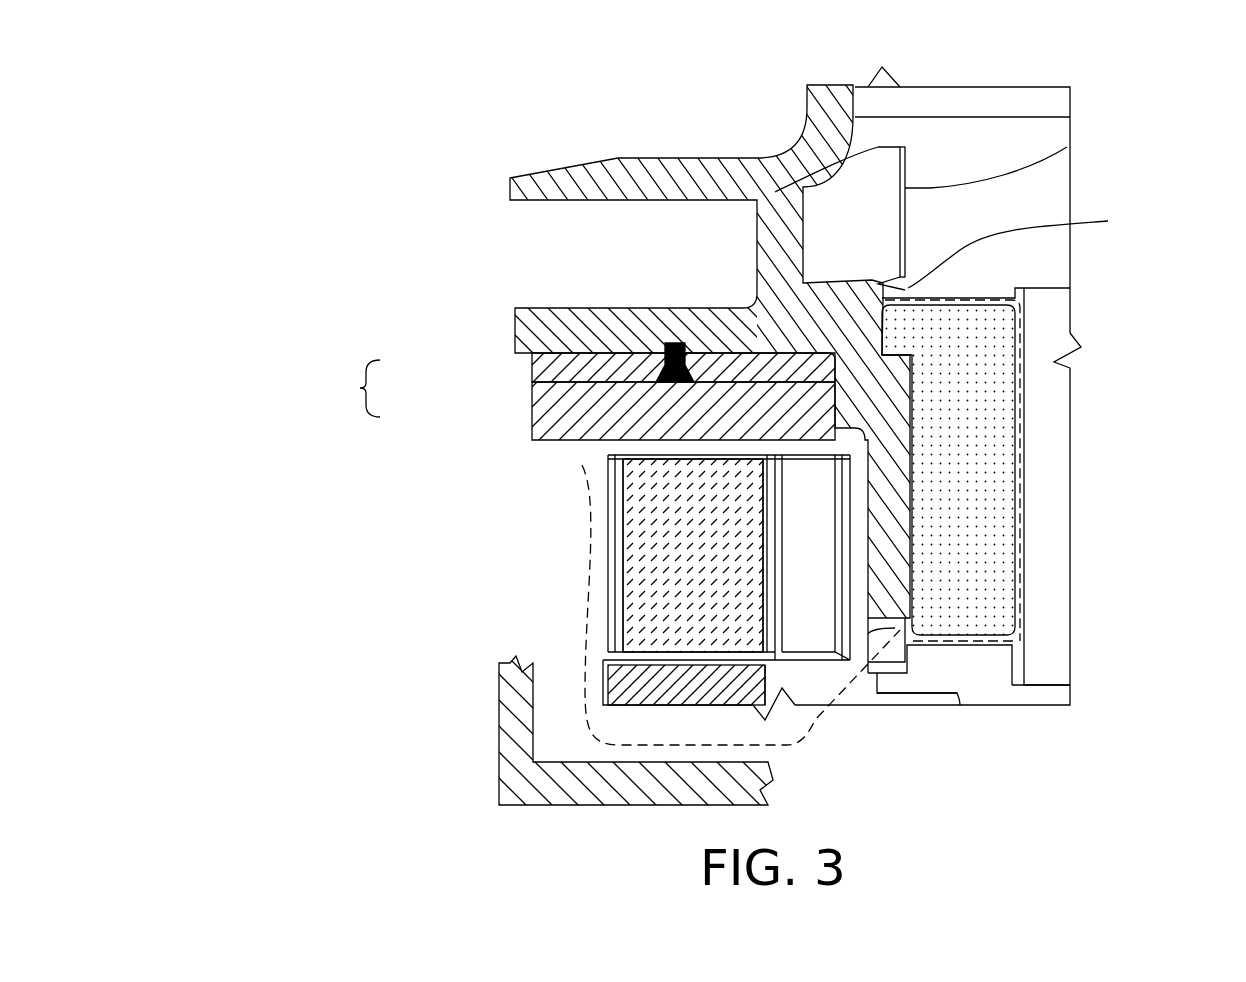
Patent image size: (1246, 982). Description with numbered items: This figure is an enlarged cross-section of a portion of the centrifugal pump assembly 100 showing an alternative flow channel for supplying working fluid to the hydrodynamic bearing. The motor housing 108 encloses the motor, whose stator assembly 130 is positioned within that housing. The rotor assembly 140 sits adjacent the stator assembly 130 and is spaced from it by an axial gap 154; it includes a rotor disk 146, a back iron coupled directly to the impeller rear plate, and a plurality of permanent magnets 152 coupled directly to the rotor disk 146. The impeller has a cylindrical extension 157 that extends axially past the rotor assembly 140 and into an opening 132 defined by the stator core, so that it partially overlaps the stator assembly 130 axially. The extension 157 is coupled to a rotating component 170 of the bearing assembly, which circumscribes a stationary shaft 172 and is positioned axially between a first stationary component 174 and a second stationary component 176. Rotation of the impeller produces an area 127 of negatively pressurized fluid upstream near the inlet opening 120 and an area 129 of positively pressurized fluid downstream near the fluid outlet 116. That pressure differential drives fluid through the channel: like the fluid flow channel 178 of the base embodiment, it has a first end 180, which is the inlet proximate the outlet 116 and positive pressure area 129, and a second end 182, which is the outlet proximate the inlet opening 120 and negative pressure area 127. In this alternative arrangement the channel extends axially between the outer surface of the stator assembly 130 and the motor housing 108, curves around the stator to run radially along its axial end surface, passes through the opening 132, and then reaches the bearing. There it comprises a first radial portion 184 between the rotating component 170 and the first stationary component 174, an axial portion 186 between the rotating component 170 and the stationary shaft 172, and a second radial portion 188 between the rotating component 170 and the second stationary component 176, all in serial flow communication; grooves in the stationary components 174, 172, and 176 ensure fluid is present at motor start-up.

The centrifugal pump assembly 100 is at (485, 147).
The motor housing 108 is at (592, 805).
The fluid outlet 116 is at (485, 248).
The inlet opening 120 is at (953, 128).
The area of negatively pressurized fluid 127 is at (908, 128).
The area of positively pressurized fluid 129 is at (323, 439).
The stator assembly 130 is at (573, 662).
The opening 132 is at (816, 632).
The rotor assembly 140 is at (344, 388).
The rotor disk 146 is at (530, 364).
The permanent magnets 152 is at (530, 402).
The axial gap 154 is at (532, 448).
The cylindrical extension 157 is at (868, 634).
The rotating component 170 is at (1005, 570).
The stationary shaft 172 is at (1055, 333).
The first stationary component 174 is at (1002, 703).
The second stationary component 176 is at (1060, 258).
The fluid flow channel 178 is at (585, 578).
The first end 180 is at (602, 458).
The second end 182 is at (884, 270).
The first radial portion 184 is at (940, 645).
The axial portion 186 is at (1022, 490).
The second radial portion 188 is at (963, 297).